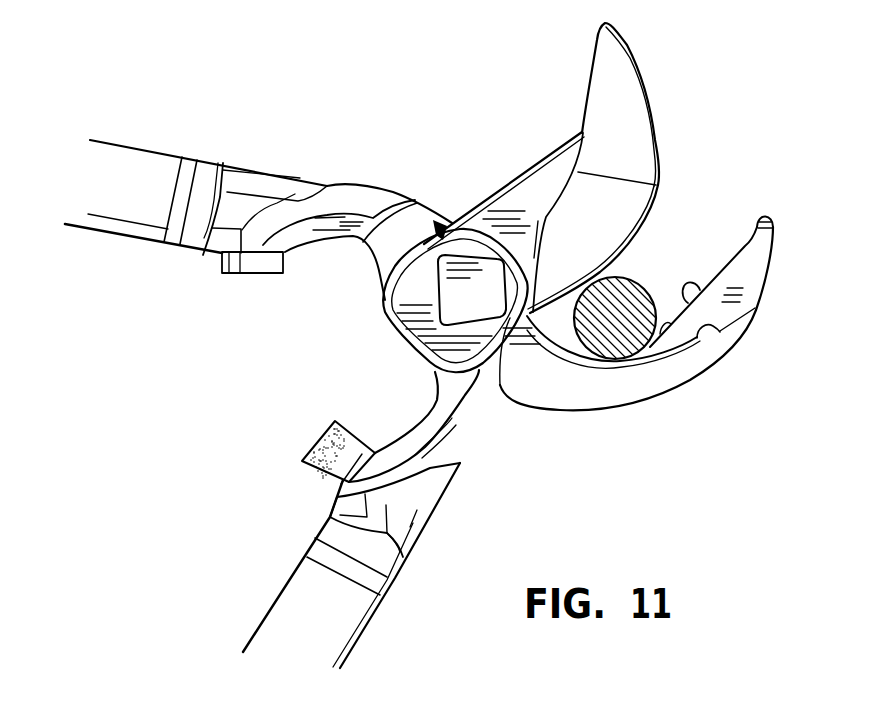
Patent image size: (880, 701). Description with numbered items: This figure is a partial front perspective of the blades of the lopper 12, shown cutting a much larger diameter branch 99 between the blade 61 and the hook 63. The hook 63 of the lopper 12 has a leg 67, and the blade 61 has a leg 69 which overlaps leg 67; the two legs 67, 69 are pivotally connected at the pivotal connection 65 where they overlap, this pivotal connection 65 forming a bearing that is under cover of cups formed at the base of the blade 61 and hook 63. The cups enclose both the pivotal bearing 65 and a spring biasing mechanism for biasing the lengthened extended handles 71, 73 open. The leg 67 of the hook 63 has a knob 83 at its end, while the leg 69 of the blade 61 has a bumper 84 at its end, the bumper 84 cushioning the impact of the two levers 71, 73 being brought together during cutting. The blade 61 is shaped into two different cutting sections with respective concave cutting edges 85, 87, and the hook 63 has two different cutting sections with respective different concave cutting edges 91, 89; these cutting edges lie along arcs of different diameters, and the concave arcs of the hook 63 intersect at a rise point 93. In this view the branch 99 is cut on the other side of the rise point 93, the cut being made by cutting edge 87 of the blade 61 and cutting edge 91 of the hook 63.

The lopper 12 is at (781, 115).
The blade 61 is at (510, 193).
The hook 63 is at (610, 410).
The pivotal connection 65 is at (392, 335).
The leg 67 is at (375, 190).
The leg 69 is at (482, 418).
The handle 71 is at (152, 150).
The handle 73 is at (272, 620).
The knob 83 is at (253, 274).
The bumper 84 is at (315, 430).
The cutting edge 85 is at (638, 64).
The cutting edge 87 is at (640, 216).
The cutting edge 89 is at (745, 243).
The cutting edge 91 is at (678, 328).
The rise point 93 is at (693, 283).
The branch 99 is at (650, 297).